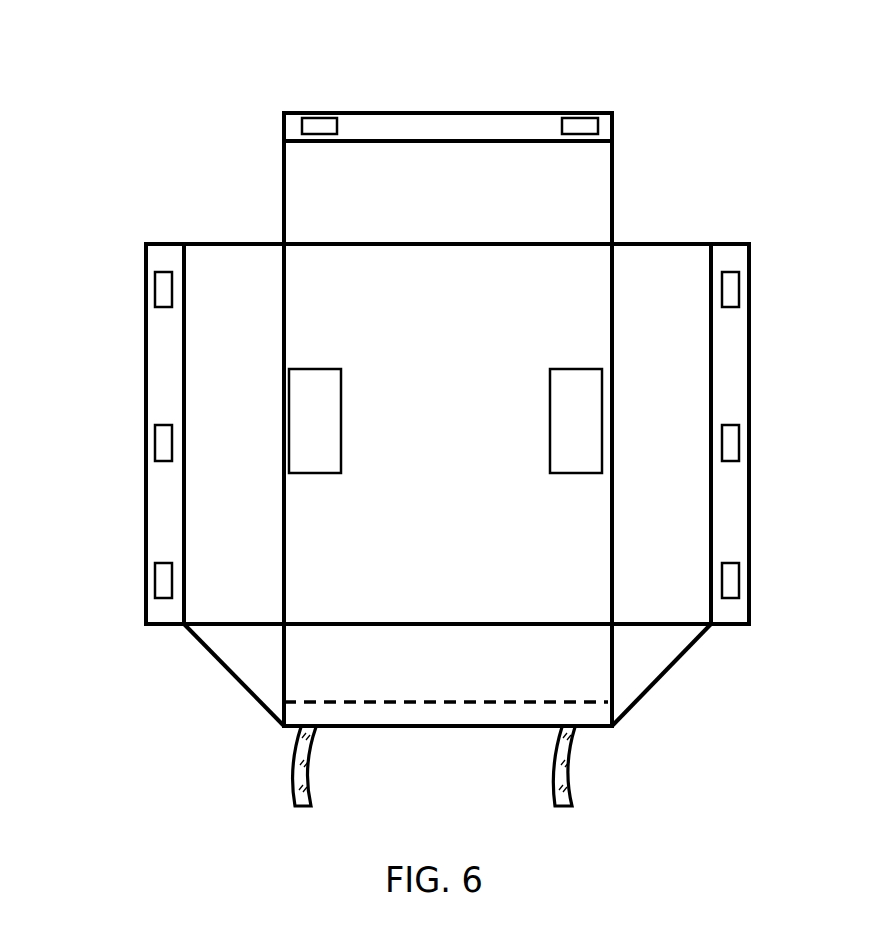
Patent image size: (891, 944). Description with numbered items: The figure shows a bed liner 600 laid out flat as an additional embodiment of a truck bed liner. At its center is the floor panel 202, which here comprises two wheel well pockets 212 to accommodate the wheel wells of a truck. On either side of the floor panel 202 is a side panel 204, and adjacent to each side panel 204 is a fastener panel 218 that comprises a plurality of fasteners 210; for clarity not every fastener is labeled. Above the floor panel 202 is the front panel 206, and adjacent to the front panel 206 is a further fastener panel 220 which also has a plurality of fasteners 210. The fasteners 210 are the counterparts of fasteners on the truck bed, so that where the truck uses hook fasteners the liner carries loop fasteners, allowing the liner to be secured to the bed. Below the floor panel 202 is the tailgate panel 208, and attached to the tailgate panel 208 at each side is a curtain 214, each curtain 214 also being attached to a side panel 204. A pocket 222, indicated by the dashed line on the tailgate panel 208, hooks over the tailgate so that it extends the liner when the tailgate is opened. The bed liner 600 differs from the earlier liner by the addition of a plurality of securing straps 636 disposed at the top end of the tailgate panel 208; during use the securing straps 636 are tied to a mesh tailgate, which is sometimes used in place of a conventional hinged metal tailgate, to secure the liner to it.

The bed liner 600 is at (92, 108).
The floor panel 202 is at (465, 458).
The side panel 204 is at (256, 481).
The front panel 206 is at (473, 204).
The tailgate panel 208 is at (456, 672).
The fastener 210 is at (730, 440).
The wheel well pocket 212 is at (317, 383).
The curtain 214 is at (250, 665).
The fastener panel 218 is at (160, 252).
The fastener panel 220 is at (503, 121).
The pocket 222 is at (573, 703).
The securing strap 636 is at (297, 788).